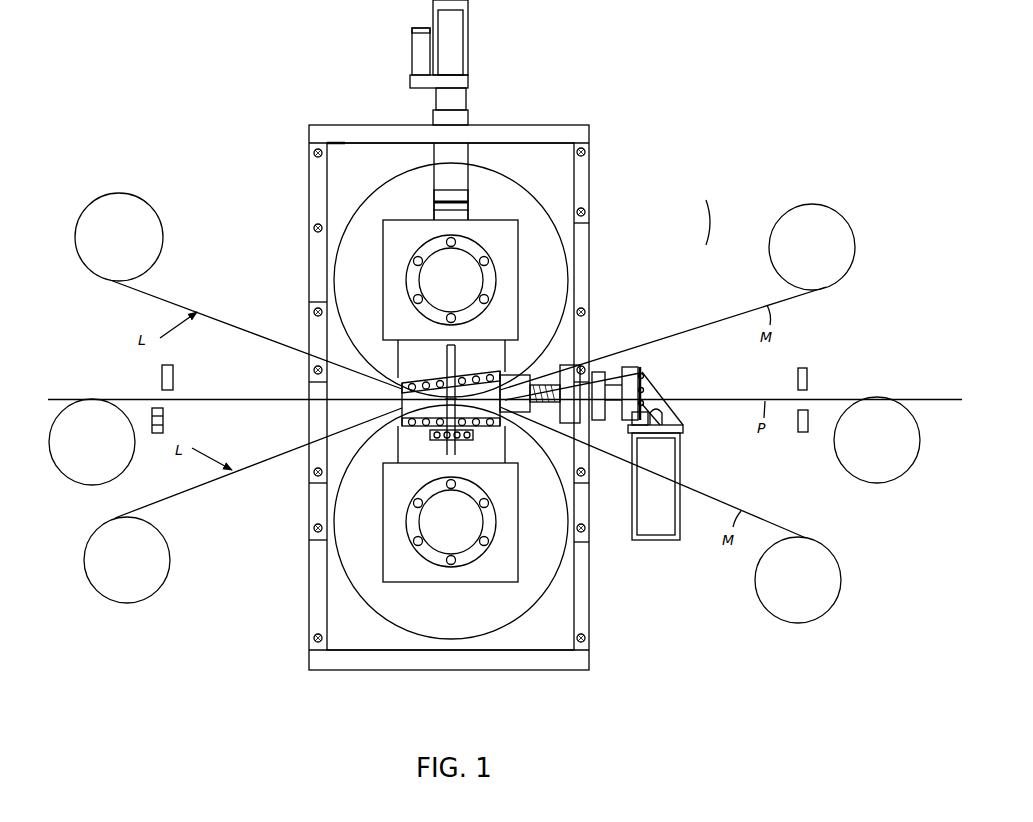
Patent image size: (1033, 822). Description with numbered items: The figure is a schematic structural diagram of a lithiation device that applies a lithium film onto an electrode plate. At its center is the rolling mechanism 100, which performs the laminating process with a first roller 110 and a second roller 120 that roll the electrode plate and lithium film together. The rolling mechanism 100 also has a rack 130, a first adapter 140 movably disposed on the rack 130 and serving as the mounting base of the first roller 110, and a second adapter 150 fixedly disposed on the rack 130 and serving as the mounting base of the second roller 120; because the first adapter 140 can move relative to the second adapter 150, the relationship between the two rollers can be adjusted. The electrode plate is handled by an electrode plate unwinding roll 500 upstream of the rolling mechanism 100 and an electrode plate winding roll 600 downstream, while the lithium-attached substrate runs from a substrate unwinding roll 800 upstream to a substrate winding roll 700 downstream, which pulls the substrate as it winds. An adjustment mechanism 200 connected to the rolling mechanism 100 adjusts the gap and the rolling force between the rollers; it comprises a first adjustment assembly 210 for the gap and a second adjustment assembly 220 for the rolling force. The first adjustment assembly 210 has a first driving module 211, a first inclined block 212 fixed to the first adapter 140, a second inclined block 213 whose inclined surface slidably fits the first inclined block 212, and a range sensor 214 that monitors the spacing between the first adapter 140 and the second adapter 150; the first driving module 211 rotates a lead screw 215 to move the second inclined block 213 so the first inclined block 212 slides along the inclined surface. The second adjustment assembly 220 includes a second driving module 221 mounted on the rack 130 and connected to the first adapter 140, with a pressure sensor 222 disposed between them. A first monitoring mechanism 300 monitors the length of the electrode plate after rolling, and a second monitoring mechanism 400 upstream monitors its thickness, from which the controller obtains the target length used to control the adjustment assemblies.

The rolling mechanism 100 is at (272, 192).
The first roller 110 is at (342, 237).
The second roller 120 is at (442, 636).
The rack 130 is at (362, 133).
The first adapter 140 is at (395, 292).
The second adapter 150 is at (480, 575).
The adjustment mechanism 200 is at (723, 222).
The first adjustment assembly 210 is at (663, 352).
The first driving module 211 is at (668, 452).
The first inclined block 212 is at (402, 380).
The second inclined block 213 is at (402, 412).
The range sensor 214 is at (446, 440).
The lead screw 215 is at (643, 377).
The second adjustment assembly 220 is at (507, 68).
The second driving module 221 is at (458, 46).
The pressure sensor 222 is at (451, 206).
The first monitoring mechanism 300 is at (813, 378).
The second monitoring mechanism 400 is at (158, 378).
The electrode plate unwinding roll 500 is at (63, 470).
The electrode plate winding roll 600 is at (882, 478).
The substrate winding roll 700 is at (840, 238).
The substrate unwinding roll 800 is at (155, 240).